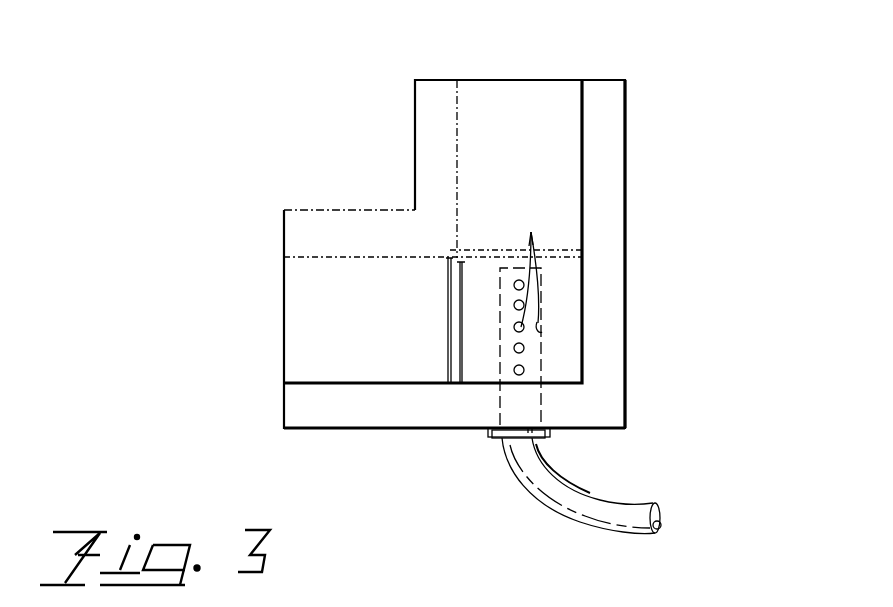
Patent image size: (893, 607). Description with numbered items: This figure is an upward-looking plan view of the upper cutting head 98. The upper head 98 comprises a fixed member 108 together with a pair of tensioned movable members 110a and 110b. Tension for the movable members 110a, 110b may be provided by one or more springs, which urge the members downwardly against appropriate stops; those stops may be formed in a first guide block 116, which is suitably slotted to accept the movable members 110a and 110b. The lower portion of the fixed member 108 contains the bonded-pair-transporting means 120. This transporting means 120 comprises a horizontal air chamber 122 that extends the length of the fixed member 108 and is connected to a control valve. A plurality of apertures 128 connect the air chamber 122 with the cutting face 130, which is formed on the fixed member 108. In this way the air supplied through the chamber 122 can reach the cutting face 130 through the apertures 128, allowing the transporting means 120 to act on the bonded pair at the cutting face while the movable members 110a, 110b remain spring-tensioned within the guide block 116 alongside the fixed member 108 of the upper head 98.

The upper head 98 is at (660, 144).
The fixed member 108 is at (466, 334).
The movable member 110a is at (312, 278).
The movable member 110b is at (507, 100).
The first guide block 116 is at (346, 214).
The bonded-pair-transporting means 120 is at (552, 345).
The horizontal air chamber 122 is at (541, 318).
The apertures 128 is at (518, 271).
The cutting face 130 is at (495, 327).